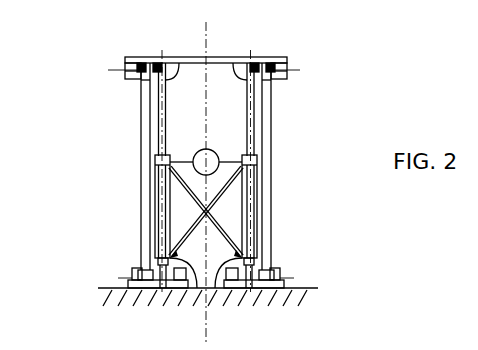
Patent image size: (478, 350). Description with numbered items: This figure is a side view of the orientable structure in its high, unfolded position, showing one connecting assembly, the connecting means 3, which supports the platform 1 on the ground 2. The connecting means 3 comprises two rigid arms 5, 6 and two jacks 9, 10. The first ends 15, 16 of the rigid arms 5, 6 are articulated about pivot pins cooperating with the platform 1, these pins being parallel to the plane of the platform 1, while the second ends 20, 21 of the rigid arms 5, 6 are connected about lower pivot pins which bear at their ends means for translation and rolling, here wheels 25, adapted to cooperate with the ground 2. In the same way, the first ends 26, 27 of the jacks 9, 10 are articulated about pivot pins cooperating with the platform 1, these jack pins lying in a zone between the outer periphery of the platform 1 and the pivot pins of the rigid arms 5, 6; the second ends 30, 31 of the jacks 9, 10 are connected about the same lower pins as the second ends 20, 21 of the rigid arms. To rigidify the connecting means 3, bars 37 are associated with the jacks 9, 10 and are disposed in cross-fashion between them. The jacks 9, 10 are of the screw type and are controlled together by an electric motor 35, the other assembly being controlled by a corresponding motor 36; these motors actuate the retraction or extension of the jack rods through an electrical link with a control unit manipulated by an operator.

The platform 1 is at (196, 44).
The ground 2 is at (98, 288).
The connecting means 3 is at (113, 216).
The rigid arm 5 is at (271, 150).
The rigid arm 6 is at (141, 138).
The jack 9 is at (257, 178).
The jack 10 is at (155, 182).
The first end of rigid arm 15 is at (271, 83).
The first end of rigid arm 16 is at (141, 87).
The second end of rigid arm 20 is at (271, 253).
The second end of rigid arm 21 is at (141, 256).
The wheels 25 is at (120, 291).
The first end of jack 26 is at (238, 57).
The first end of jack 27 is at (170, 57).
The second end of jack 30 is at (228, 288).
The second end of jack 31 is at (186, 288).
The electric motor 35 is at (208, 141).
The electric motor 36 is at (183, 128).
The bars 37 is at (225, 229).